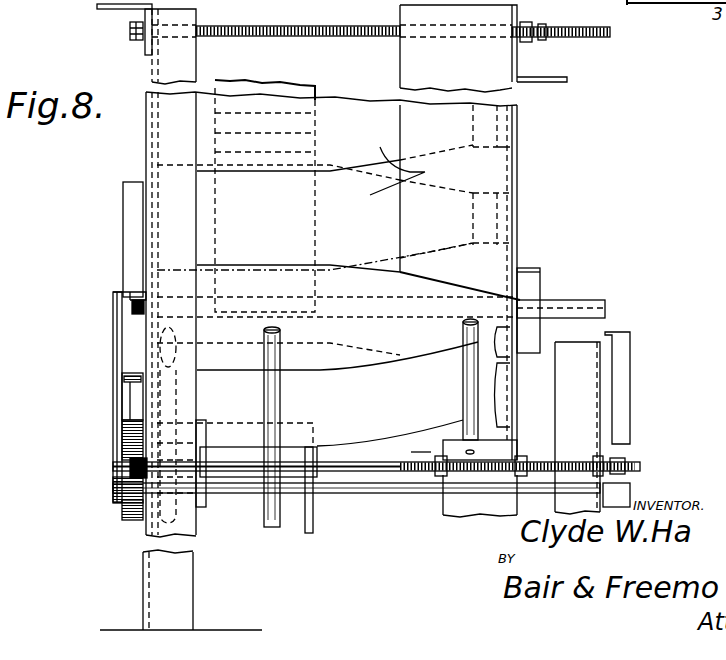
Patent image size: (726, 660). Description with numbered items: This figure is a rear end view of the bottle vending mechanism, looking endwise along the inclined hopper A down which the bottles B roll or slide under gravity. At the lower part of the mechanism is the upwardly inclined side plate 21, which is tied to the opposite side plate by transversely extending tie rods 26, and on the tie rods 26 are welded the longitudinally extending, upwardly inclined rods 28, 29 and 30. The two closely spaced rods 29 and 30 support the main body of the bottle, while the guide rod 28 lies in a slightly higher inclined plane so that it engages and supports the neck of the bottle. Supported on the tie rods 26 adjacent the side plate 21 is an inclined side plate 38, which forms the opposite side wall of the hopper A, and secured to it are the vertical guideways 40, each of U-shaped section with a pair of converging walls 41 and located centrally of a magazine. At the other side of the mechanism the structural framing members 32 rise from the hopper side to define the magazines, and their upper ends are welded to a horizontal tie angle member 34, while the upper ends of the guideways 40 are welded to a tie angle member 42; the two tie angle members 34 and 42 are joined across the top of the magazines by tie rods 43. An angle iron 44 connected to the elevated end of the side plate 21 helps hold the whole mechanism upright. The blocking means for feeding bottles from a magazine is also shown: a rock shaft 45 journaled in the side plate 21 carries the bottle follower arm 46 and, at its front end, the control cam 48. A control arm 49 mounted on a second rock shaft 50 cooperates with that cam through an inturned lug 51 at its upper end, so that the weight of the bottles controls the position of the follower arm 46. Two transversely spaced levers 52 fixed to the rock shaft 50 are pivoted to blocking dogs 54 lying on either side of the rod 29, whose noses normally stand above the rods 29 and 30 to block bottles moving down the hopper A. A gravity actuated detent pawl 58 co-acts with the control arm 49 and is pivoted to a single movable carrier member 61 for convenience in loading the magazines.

The tie angle member 34 is at (115, 11).
The tie rods 43 is at (317, 38).
The bottle follower arm 46 is at (308, 88).
The converging walls 41 is at (410, 68).
The tie angle member 42 is at (545, 83).
The guideways 40 is at (517, 92).
The bottles B is at (405, 171).
The control cam 48 is at (130, 240).
The inturned lug 51 is at (128, 294).
The control arm 49 is at (113, 363).
The gravity actuated detent pawl 58 is at (128, 410).
The carrier member 61 is at (123, 449).
The bottle supporting rod 30 is at (170, 410).
The bottle supporting rod 29 is at (280, 390).
The guide rod 28 is at (465, 380).
The side plate 38 is at (522, 292).
The rock shaft 45 is at (582, 302).
The side plate 21 is at (633, 360).
The angle iron 44 is at (560, 423).
The inclined hopper A is at (421, 441).
The tie rods 26 is at (352, 470).
The rock shaft 50 is at (362, 494).
The blocking dogs 54 is at (300, 424).
The levers 52 is at (305, 510).
The structural framing members 32 is at (178, 584).